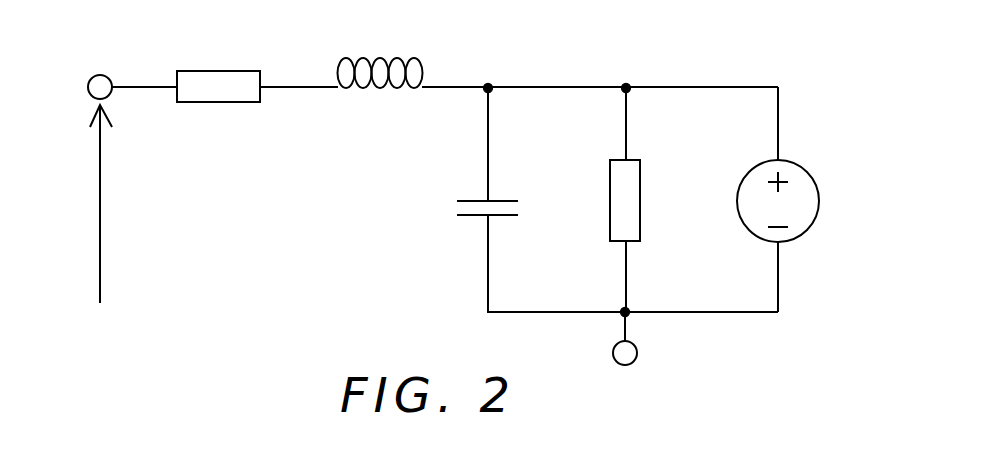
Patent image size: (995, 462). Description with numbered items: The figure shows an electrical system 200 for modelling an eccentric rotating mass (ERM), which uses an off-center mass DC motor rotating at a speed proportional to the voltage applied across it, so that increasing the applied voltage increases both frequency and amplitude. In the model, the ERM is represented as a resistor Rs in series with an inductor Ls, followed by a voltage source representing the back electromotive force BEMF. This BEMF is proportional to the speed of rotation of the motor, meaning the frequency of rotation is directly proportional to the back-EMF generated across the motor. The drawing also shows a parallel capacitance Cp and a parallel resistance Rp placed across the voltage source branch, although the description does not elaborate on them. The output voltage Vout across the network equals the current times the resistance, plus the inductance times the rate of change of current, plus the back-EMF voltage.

The electrical system 200 is at (137, 47).
The resistor Rs is at (218, 101).
The inductor Ls is at (380, 87).
The parallel capacitance Cp is at (506, 209).
The parallel resistance Rp is at (643, 200).
The back electromotive force BEMF is at (807, 201).
The output voltage Vout is at (79, 204).